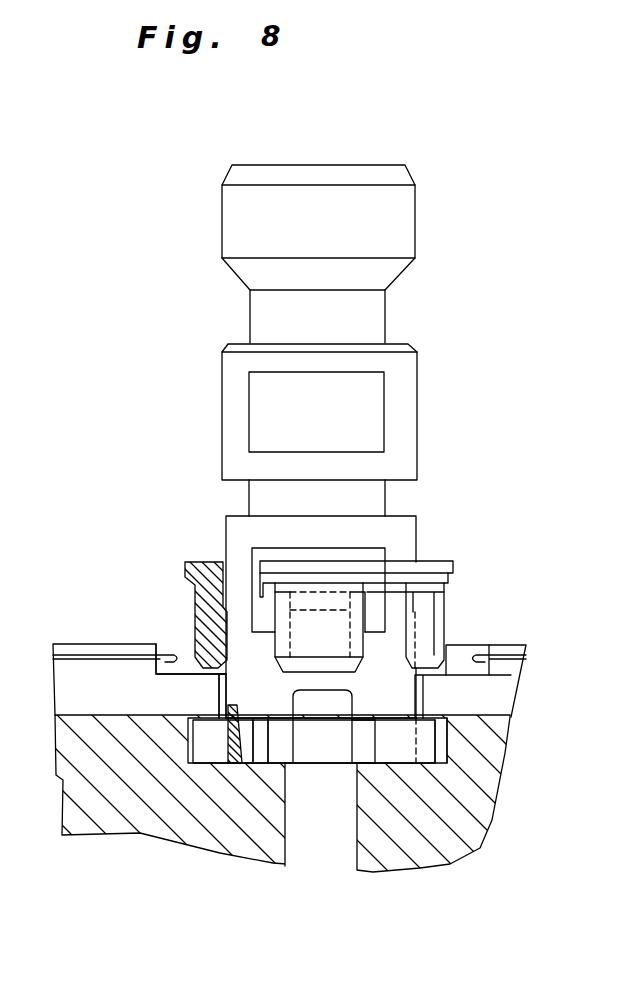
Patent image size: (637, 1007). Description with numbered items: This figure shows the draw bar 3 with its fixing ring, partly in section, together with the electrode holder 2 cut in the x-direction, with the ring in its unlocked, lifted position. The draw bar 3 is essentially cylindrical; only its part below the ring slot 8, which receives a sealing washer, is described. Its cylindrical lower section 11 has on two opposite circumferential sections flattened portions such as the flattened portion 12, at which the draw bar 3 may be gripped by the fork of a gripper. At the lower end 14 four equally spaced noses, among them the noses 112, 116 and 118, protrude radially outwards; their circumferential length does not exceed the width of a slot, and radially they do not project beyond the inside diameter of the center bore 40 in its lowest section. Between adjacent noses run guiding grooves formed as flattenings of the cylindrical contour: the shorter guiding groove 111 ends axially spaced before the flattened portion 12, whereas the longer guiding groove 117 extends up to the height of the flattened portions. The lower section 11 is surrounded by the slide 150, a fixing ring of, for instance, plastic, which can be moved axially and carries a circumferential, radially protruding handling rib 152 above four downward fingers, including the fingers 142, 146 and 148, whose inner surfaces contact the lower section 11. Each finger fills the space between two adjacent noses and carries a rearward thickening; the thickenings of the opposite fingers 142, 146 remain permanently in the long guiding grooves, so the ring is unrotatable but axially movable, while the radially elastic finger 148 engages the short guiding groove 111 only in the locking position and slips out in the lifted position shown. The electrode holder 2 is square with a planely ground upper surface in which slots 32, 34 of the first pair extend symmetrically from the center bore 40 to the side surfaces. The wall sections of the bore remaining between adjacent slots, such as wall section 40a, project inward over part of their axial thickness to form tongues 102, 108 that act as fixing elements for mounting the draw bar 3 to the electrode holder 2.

The electrode holder 2 is at (258, 865).
The draw bar 3 is at (418, 414).
The ring slot 8 is at (249, 498).
The cylindrical lower section 11 is at (226, 544).
The flattened portion 12 is at (363, 557).
The lower end 14 is at (405, 752).
The slot 32 is at (485, 704).
The slot 34 is at (76, 698).
The center bore 40 is at (448, 767).
The wall section 40a is at (365, 738).
The tongue 102 is at (432, 697).
The tongue 108 is at (207, 687).
The guiding groove 111 is at (305, 750).
The nose 112 is at (440, 744).
The nose 116 is at (207, 750).
The guiding groove 117 is at (222, 700).
The nose 118 is at (250, 753).
The finger 142 is at (428, 613).
The finger 146 is at (202, 608).
The finger 148 is at (306, 600).
The slide 150 is at (433, 561).
The handling rib 152 is at (185, 565).